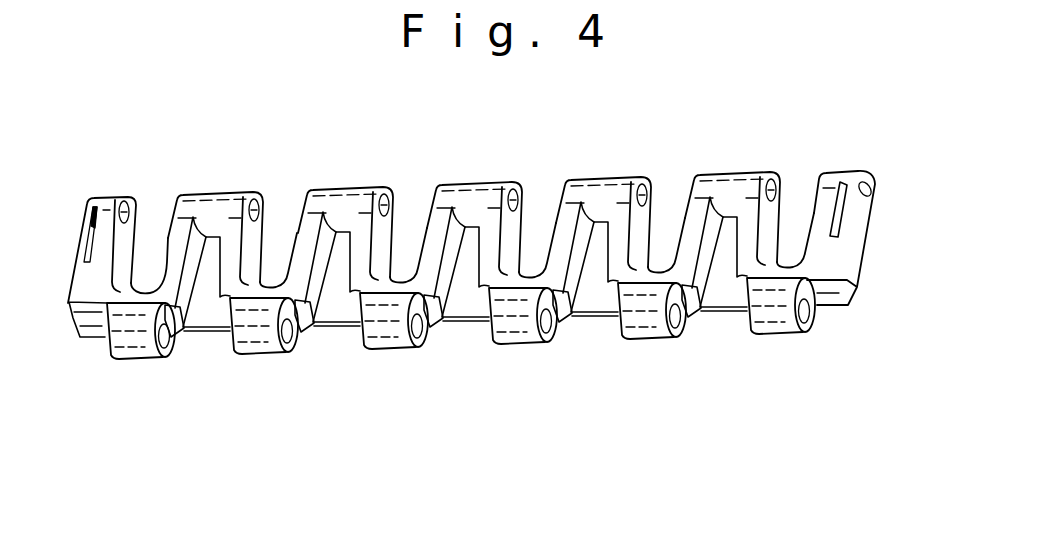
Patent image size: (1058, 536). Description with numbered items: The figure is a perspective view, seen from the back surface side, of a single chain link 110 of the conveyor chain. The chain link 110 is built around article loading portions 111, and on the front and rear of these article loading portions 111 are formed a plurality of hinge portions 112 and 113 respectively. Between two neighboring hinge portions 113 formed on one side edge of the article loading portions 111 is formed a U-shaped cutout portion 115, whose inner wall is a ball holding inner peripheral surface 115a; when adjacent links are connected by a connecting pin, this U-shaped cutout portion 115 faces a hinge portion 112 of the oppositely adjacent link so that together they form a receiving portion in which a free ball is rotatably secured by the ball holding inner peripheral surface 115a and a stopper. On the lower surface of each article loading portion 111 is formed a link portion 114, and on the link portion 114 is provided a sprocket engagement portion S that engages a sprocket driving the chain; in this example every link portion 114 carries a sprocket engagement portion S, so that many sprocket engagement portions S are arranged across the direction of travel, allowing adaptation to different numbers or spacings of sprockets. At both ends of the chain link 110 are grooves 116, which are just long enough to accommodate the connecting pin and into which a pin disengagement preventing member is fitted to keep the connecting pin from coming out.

The chain link 110 is at (365, 147).
The article loading portion 111 is at (590, 322).
The hinge portion 112 is at (388, 337).
The hinge portion 113 is at (327, 192).
The link portion 114 is at (618, 243).
The U-shaped cutout portion 115 is at (418, 213).
The ball holding inner peripheral surface 115a is at (398, 212).
The groove 116 is at (840, 223).
The sprocket engagement portion S is at (723, 277).